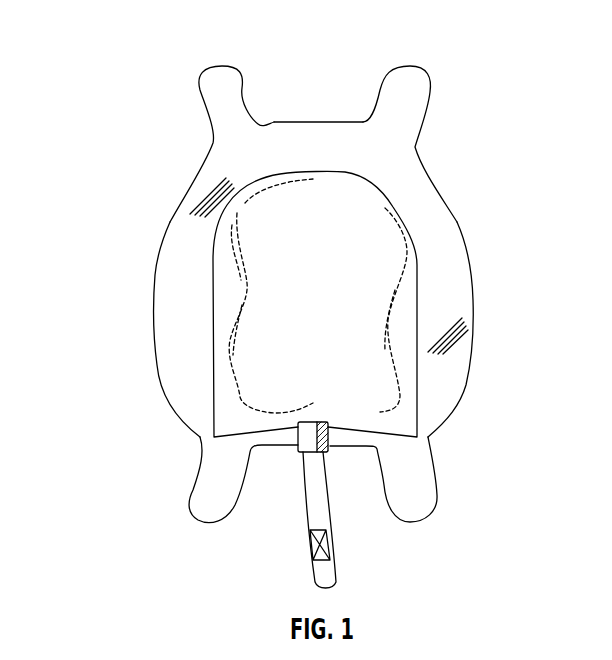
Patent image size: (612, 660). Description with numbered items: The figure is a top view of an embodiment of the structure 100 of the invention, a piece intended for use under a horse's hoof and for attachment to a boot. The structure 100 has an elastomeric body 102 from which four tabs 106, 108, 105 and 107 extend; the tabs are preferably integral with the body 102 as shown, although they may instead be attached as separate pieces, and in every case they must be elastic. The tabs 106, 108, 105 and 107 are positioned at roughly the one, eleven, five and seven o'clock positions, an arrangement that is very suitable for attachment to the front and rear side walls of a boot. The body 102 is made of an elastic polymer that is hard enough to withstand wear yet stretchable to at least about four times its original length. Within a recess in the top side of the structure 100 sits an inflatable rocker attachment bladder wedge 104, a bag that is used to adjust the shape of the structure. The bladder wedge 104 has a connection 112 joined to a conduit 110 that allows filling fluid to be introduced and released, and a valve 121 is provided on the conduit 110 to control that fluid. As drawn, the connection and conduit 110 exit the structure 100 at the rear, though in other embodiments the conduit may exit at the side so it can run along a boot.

The structure 100 is at (111, 103).
The elastomeric body 102 is at (447, 200).
The inflatable rocker attachment bladder wedge 104 is at (417, 283).
The tab 105 is at (412, 522).
The tab 106 is at (207, 67).
The tab 107 is at (208, 522).
The tab 108 is at (413, 67).
The conduit 110 is at (305, 515).
The connection 112 is at (303, 440).
The valve 121 is at (330, 547).